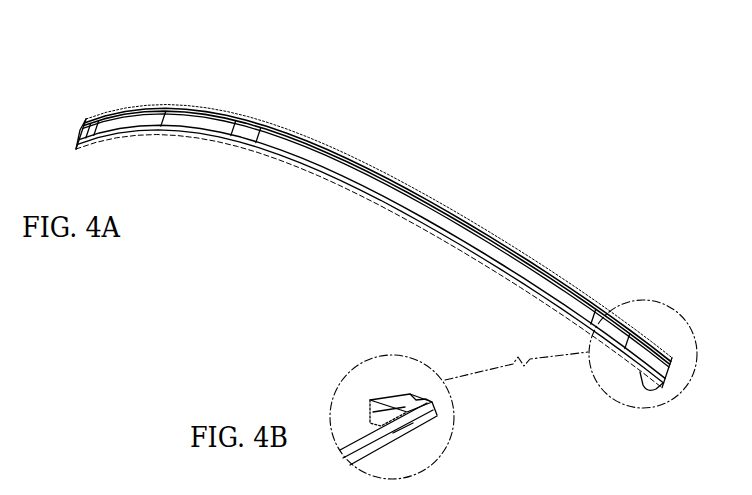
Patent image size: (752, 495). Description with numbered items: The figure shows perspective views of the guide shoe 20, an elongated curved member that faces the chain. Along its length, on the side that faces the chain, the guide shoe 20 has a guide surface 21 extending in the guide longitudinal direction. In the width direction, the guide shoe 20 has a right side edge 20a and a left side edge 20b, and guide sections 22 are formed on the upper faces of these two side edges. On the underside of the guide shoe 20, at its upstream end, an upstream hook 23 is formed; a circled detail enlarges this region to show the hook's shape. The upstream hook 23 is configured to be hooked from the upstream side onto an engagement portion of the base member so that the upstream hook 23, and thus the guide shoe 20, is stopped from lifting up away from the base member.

In FIG. 4A, the guide shoe 20 is at (72, 82).
In FIG. 4A, the right side edge 20a is at (347, 155).
In FIG. 4A, the left side edge 20b is at (323, 178).
In FIG. 4A, the guide surface 21 is at (468, 230).
In FIG. 4A, the guide section 22 is at (281, 131).
In FIG. 4A, the upstream hook 23 is at (650, 392).
In FIG. 4B, the upstream hook 23 is at (385, 397).